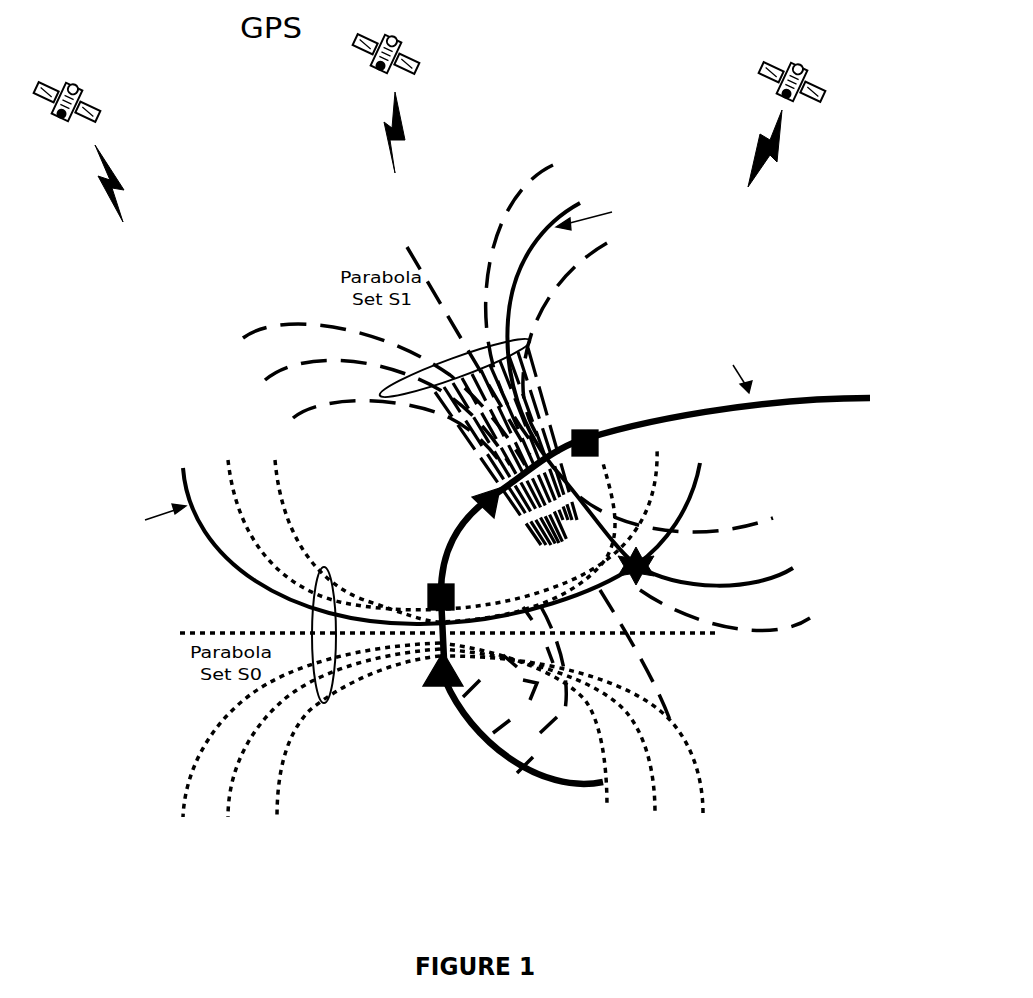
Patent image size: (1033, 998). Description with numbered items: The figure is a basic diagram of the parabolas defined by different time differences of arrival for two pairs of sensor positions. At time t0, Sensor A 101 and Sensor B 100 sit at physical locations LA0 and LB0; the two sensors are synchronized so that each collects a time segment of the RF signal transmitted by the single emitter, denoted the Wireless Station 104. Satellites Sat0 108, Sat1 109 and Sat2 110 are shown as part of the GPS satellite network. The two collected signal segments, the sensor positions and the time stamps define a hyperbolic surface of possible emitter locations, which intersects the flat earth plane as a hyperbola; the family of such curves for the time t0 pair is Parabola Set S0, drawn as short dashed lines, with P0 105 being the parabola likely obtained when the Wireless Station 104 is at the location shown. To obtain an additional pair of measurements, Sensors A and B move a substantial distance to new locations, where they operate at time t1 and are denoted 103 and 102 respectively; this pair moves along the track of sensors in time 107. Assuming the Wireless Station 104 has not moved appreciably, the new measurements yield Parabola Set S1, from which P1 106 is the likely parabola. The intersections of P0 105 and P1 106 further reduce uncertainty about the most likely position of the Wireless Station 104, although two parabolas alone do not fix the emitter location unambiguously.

The Sensor B 100 is at (430, 672).
The Sensor A 101 is at (456, 598).
The Sensor B at time t1 102 is at (495, 520).
The Sensor A at time t1 103 is at (600, 452).
The Wireless Station 104 is at (648, 578).
The Parabola P0 105 is at (205, 540).
The Parabola P1 106 is at (527, 267).
The Track of sensors in time 107 is at (808, 402).
The Satellite Sat0 108 is at (96, 106).
The Satellite Sat1 109 is at (414, 62).
The Satellite Sat2 110 is at (818, 92).